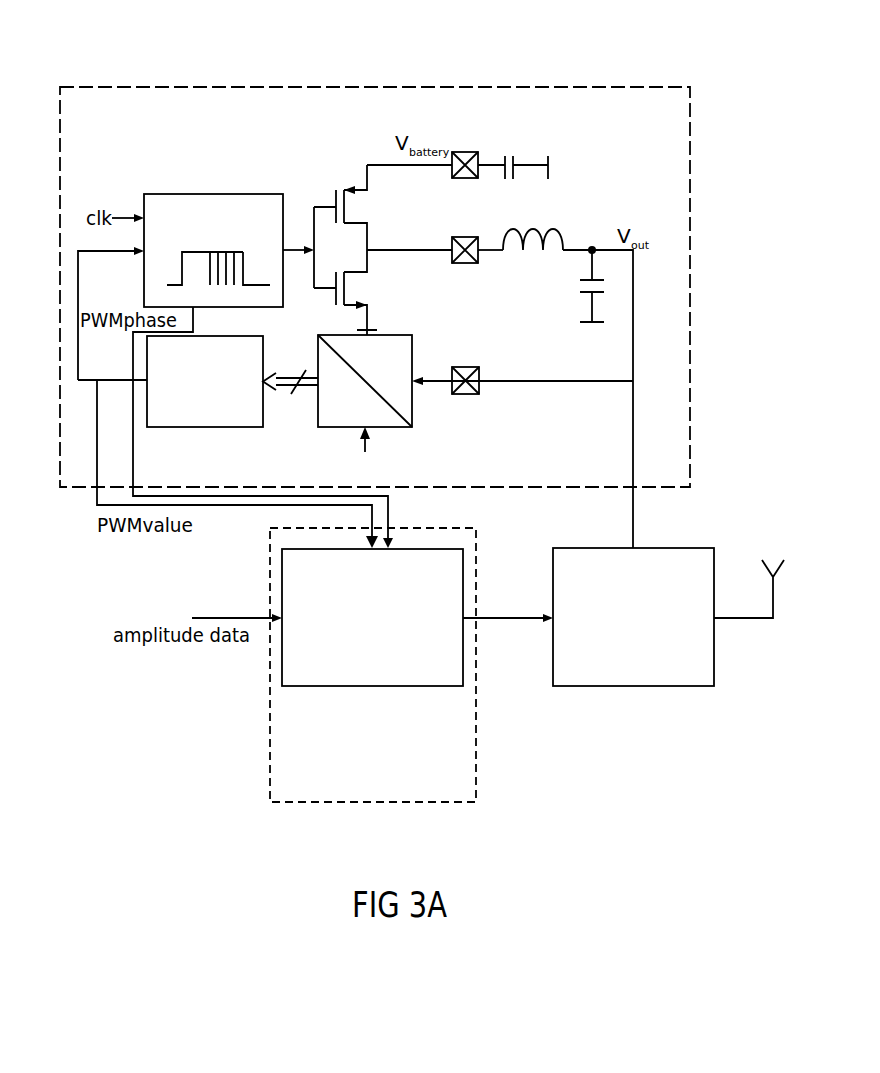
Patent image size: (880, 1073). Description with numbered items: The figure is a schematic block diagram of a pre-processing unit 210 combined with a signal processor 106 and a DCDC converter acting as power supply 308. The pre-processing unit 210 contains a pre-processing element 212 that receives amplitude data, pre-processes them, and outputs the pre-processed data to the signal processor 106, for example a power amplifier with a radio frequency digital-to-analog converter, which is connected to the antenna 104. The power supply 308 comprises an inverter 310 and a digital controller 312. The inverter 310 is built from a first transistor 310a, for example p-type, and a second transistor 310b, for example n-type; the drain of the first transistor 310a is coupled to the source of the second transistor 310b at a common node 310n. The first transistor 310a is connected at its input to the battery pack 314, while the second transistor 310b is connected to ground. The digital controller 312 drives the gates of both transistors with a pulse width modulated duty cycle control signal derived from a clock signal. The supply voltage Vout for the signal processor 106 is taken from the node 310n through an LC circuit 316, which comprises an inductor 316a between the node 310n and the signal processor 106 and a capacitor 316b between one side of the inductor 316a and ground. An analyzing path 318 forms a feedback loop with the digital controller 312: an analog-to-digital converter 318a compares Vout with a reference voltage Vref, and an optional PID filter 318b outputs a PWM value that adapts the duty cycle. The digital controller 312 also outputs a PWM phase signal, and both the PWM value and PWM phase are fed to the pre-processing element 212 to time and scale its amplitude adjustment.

The antenna 104 is at (770, 572).
The signal processor 106 is at (633, 688).
The pre-processing unit 210 is at (413, 665).
The pre-processing element 212 is at (372, 688).
The power supply 308 is at (197, 86).
The inverter 310 is at (383, 190).
The first transistor 310a is at (353, 205).
The second transistor 310b is at (353, 289).
The common node 310n is at (389, 248).
The digital controller 312 is at (210, 193).
The battery pack 314 is at (510, 155).
The LC circuit 316 is at (583, 345).
The inductor 316a is at (597, 200).
The capacitor 316b is at (597, 270).
The analyzing path 318 is at (464, 406).
The analog-to-digital converter 318a is at (400, 430).
The PID filter 318b is at (205, 430).